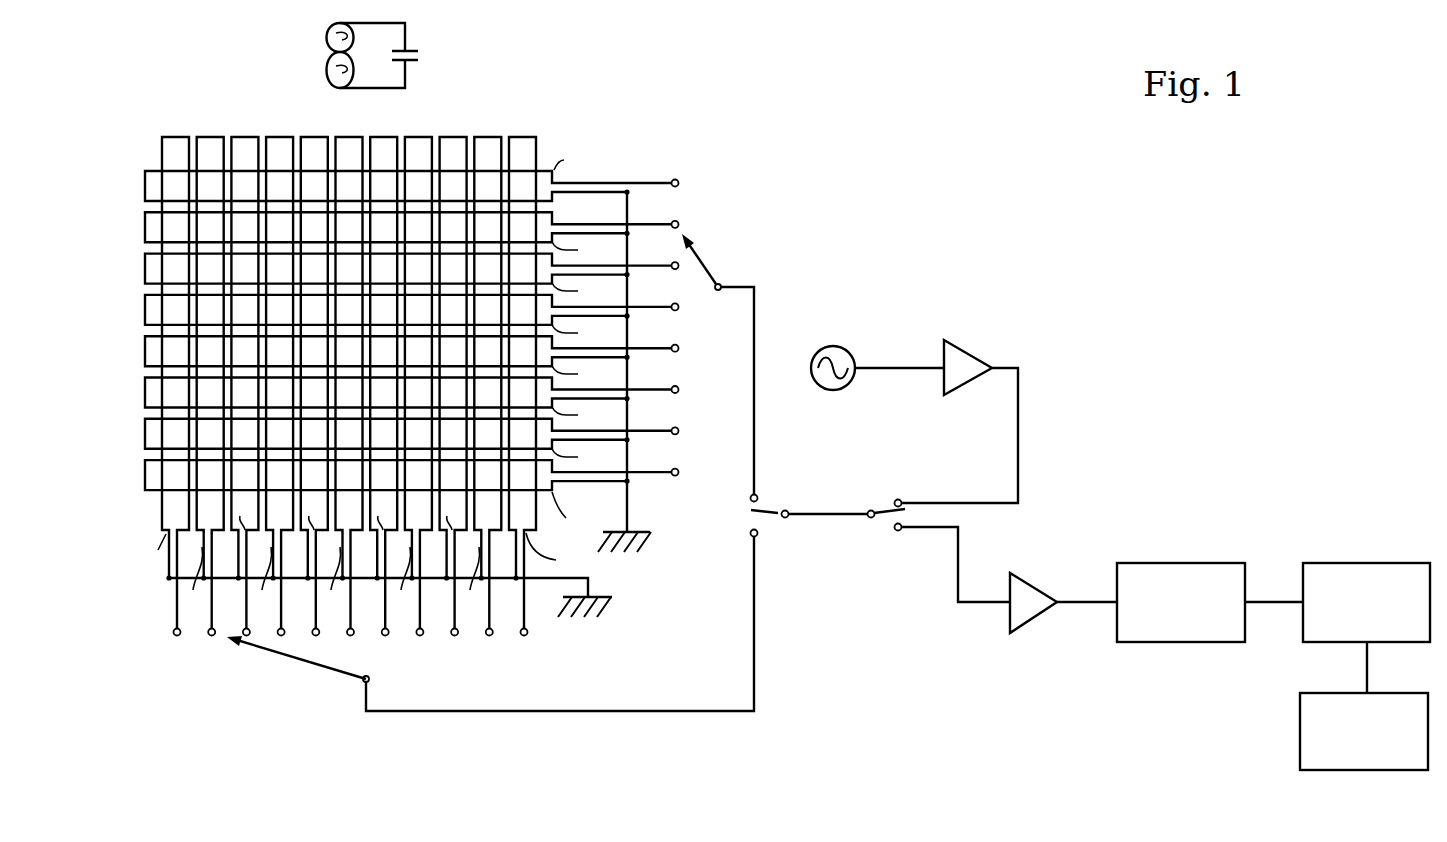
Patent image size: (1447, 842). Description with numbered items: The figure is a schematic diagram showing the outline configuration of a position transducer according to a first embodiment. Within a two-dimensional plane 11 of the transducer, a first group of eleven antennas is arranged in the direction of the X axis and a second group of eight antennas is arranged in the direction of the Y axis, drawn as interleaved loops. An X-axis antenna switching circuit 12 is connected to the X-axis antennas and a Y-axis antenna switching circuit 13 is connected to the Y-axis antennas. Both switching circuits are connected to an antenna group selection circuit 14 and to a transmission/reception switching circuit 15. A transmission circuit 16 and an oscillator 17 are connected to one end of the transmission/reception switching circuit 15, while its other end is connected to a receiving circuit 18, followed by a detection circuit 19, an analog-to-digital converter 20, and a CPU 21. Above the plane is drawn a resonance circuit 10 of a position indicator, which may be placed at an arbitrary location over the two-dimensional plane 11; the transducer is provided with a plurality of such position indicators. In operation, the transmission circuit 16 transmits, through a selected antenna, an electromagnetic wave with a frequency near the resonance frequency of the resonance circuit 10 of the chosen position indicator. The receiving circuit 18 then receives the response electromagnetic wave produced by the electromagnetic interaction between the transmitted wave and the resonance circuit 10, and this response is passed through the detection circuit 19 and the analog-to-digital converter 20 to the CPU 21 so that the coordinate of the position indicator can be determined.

The resonance circuit of position indicator 10 is at (405, 72).
The two-dimensional plane 11 is at (555, 128).
The X-axis antenna switching circuit 12 is at (350, 672).
The Y-axis antenna switching circuit 13 is at (703, 258).
The antenna group selection circuit 14 is at (747, 520).
The transmission/reception switching circuit 15 is at (888, 508).
The transmission circuit 16 is at (956, 352).
The oscillator 17 is at (832, 346).
The receiving circuit 18 is at (1035, 618).
The detection circuit 19 is at (1157, 563).
The analog-to-digital converter 20 is at (1357, 563).
The CPU 21 is at (1360, 770).